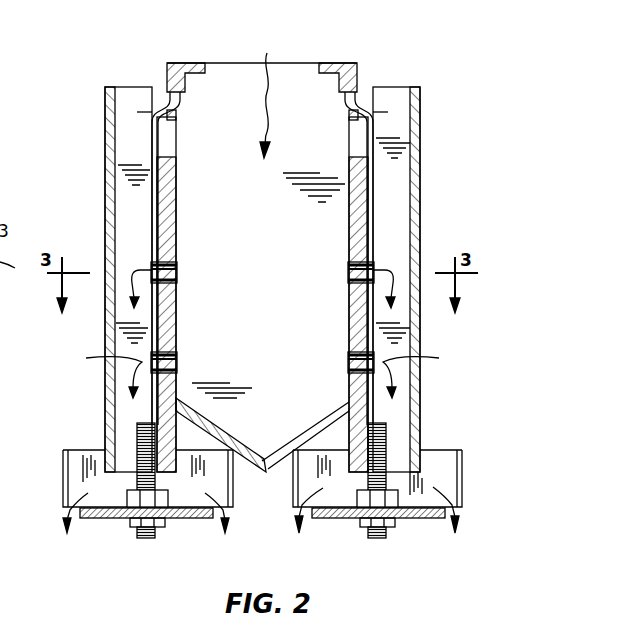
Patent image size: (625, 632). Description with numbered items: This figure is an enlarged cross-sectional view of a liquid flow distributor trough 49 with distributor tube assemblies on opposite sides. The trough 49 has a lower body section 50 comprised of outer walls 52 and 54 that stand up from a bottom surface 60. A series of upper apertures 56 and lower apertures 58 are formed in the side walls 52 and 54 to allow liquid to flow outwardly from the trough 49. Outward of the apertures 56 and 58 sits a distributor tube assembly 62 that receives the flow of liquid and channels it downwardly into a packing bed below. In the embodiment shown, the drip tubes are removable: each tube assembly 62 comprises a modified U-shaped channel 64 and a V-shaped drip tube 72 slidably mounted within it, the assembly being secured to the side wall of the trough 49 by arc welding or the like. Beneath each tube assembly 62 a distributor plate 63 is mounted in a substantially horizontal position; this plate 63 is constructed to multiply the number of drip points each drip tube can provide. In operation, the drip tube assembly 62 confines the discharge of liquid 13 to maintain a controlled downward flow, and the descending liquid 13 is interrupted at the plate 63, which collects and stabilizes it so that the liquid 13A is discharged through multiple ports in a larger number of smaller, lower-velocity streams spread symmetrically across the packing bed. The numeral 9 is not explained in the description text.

The furnace wall / support channel 9 is at (434, 412).
The liquid 13 is at (268, 122).
The discharged liquid 13A is at (62, 524).
The trough 49 is at (402, 62).
The lower body section 50 is at (216, 418).
The outer wall 52 is at (180, 318).
The outer wall 54 is at (346, 322).
The upper apertures 56 is at (178, 272).
The lower apertures 58 is at (177, 367).
The bottom surface 60 is at (333, 410).
The distributor tube assembly 62 is at (100, 150).
The distributor plate 63 is at (193, 519).
The modified U-shaped channel 64 is at (160, 183).
The V-shaped drip tube 72 is at (110, 198).